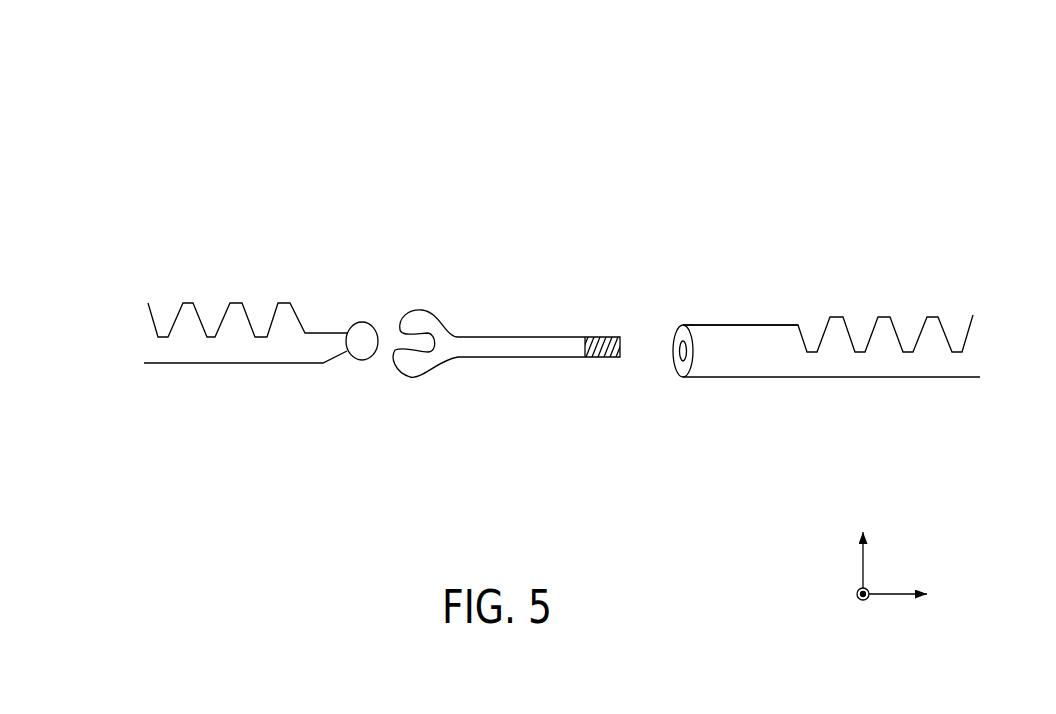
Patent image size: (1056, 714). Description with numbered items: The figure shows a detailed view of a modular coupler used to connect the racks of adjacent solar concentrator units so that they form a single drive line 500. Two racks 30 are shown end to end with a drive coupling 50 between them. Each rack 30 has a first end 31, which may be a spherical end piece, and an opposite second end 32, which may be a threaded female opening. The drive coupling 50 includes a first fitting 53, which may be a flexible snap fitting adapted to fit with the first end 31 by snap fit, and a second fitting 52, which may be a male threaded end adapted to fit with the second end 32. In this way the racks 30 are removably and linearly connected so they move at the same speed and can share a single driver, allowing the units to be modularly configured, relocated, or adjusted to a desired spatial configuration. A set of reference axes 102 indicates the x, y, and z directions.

The drive line 500 is at (197, 101).
The rack 30 is at (137, 278).
The first end 31 is at (353, 323).
The second end 32 is at (738, 325).
The drive coupling 50 is at (497, 283).
The second fitting 52 is at (590, 337).
The first fitting 53 is at (420, 310).
The reference axes 102 is at (914, 559).